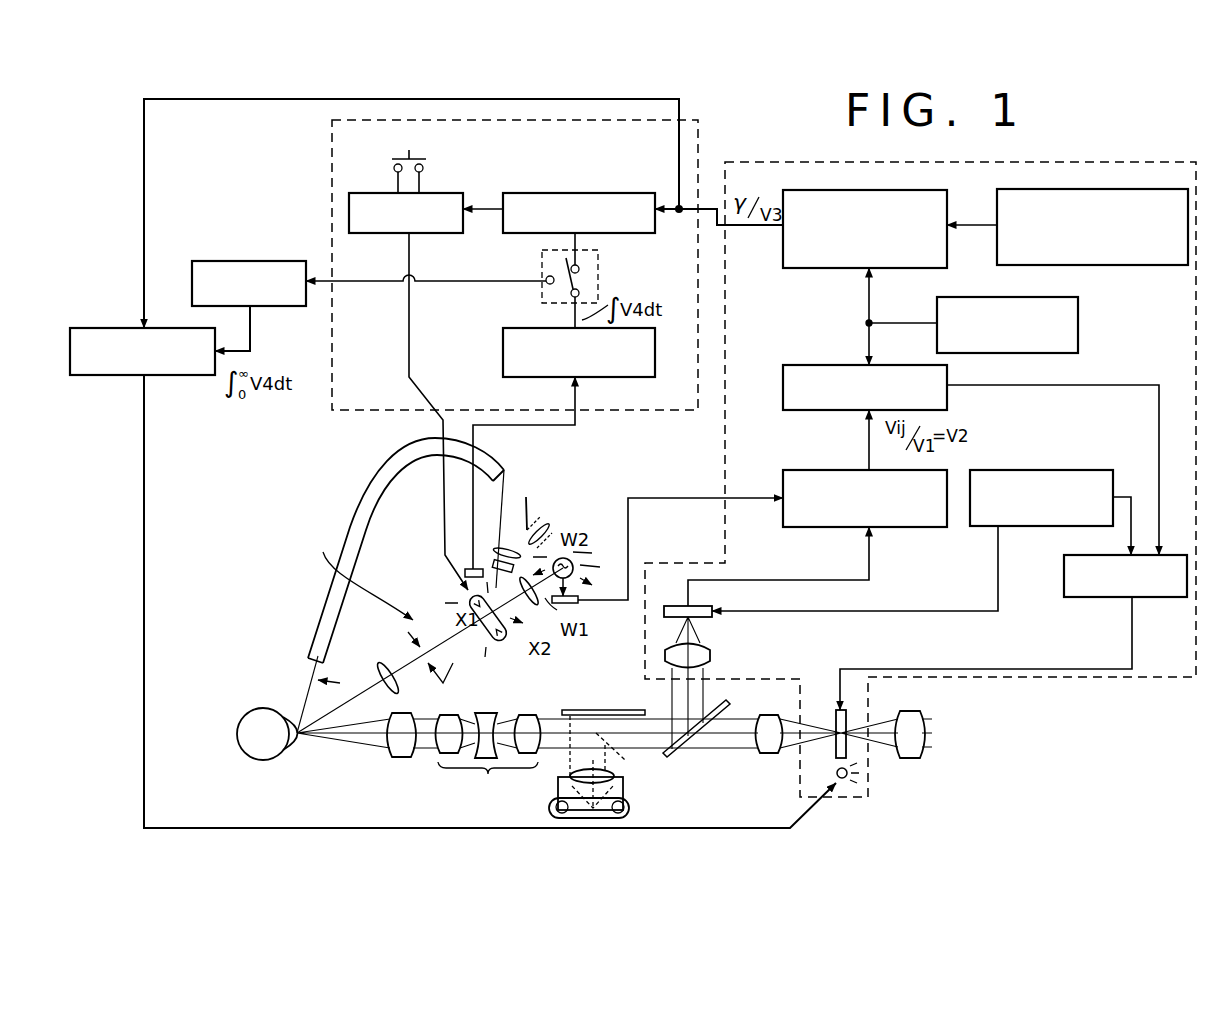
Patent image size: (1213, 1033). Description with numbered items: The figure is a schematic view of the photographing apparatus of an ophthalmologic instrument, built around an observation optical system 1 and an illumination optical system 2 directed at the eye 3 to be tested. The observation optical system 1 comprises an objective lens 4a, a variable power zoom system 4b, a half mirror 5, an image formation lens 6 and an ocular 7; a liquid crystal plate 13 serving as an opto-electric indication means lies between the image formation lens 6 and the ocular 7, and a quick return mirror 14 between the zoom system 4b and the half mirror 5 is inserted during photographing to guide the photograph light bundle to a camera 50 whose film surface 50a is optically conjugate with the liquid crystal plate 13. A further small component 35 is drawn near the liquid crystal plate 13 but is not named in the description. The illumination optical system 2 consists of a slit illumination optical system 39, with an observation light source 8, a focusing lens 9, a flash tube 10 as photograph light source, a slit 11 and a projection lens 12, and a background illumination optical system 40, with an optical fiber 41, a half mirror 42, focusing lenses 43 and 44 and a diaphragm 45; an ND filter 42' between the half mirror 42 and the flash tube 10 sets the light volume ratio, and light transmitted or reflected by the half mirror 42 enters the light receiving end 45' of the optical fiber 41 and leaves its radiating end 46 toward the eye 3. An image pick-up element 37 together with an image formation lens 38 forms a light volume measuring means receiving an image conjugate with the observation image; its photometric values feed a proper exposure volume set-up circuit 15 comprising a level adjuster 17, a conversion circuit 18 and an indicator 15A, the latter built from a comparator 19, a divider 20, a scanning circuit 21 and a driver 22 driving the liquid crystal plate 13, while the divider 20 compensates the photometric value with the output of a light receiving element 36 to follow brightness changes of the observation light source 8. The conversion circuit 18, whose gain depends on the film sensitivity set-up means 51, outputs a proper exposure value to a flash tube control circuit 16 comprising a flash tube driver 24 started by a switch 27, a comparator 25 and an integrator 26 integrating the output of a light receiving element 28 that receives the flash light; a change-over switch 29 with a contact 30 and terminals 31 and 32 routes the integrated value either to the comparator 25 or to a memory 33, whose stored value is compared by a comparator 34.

The observation optical system 1 is at (663, 788).
The illumination optical system 2 is at (305, 473).
The eye to be tested 3 is at (285, 753).
The objective lens 4a is at (403, 757).
The variable power zoom system 4b is at (488, 759).
The half mirror 5 is at (680, 752).
The image formation lens 6 is at (765, 753).
The ocular 7 is at (917, 748).
The observation light source 8 is at (576, 573).
The focusing lens 9 is at (538, 608).
The flash tube 10 is at (497, 660).
The slit 11 is at (453, 669).
The projection lens 12 is at (380, 660).
The liquid crystal plate 13 is at (848, 718).
The quick return mirror 14 is at (600, 708).
The proper exposure volume set-up circuit 15 is at (782, 160).
The indicator 15A is at (1091, 147).
The flash tube control circuit 16 is at (700, 140).
The level adjuster 17 is at (1080, 308).
The conversion circuit 18 is at (948, 205).
The comparator 19 is at (890, 365).
The divider 20 is at (820, 470).
The scanning circuit 21 is at (1085, 470).
The driver 22 is at (1064, 568).
The flash tube driver 24 is at (443, 193).
The comparator 25 is at (622, 193).
The integrator 26 is at (655, 365).
The switch 27 is at (420, 160).
The light receiving element 28 is at (445, 556).
The change-over switch 29 is at (541, 276).
The contact 30 is at (562, 292).
The terminal 31 is at (580, 268).
The terminal 32 is at (546, 283).
The memory 33 is at (283, 261).
The comparator 34 is at (110, 328).
The indicator lamp 35 is at (845, 784).
The light receiving element 36 is at (578, 605).
The image pick-up element 37 is at (705, 606).
The image formation lens 38 is at (712, 656).
The slit illumination optical system 39 is at (362, 586).
The background illumination optical system 40 is at (350, 514).
The optical fiber 41 is at (399, 460).
The half mirror 42 is at (547, 497).
The ND filter 42' is at (549, 519).
The focusing lens 43 is at (548, 527).
The focusing lens 44 is at (512, 517).
The diaphragm 45 is at (299, 682).
The light receiving end 45' is at (527, 453).
The radiating end 46 is at (307, 658).
The camera 50 is at (558, 800).
The film surface 50a is at (625, 797).
The film sensitivity set-up means 51 is at (1134, 190).